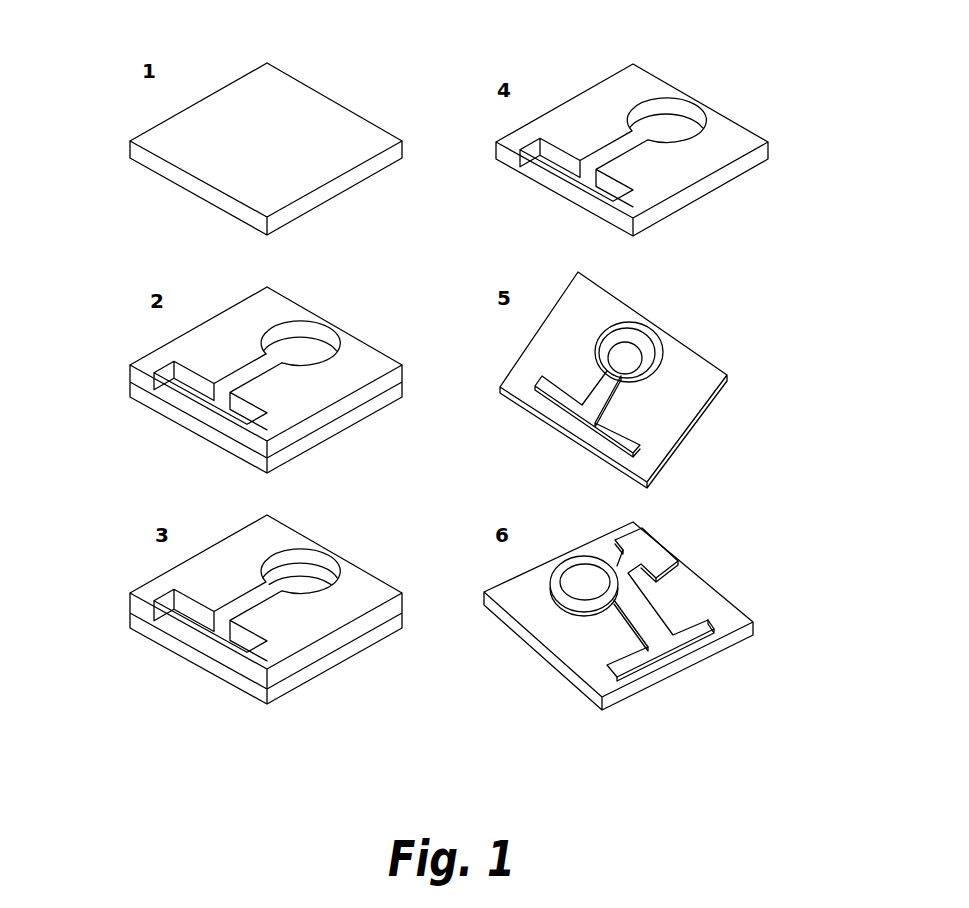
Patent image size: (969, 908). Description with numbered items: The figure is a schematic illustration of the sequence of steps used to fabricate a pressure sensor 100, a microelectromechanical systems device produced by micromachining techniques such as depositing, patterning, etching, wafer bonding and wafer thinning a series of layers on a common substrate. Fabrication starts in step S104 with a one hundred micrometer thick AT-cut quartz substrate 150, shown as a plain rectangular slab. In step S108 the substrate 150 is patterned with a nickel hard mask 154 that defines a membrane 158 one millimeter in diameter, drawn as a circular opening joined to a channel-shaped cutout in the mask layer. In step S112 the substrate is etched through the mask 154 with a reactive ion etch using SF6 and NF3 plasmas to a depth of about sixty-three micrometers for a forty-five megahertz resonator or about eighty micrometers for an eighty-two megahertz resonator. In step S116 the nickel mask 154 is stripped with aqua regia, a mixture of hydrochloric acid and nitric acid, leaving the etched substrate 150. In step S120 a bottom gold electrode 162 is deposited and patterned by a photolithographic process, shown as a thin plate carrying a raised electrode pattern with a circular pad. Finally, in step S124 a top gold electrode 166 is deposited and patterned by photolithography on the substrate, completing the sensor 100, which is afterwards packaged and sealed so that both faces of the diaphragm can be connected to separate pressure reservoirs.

The pressure sensor 100 is at (637, 616).
The AT-cut quartz substrate 150 is at (303, 125).
The nickel hard mask 154 is at (271, 478).
The membrane 158 is at (300, 348).
The bottom gold electrode 162 is at (623, 358).
The top gold electrode 166 is at (588, 582).
The substrate starting step S104 is at (150, 126).
The patterning step S108 is at (153, 415).
The etching step S112 is at (170, 658).
The mask stripping step S116 is at (710, 100).
The bottom electrode deposition step S120 is at (690, 342).
The top electrode deposition step S124 is at (705, 570).